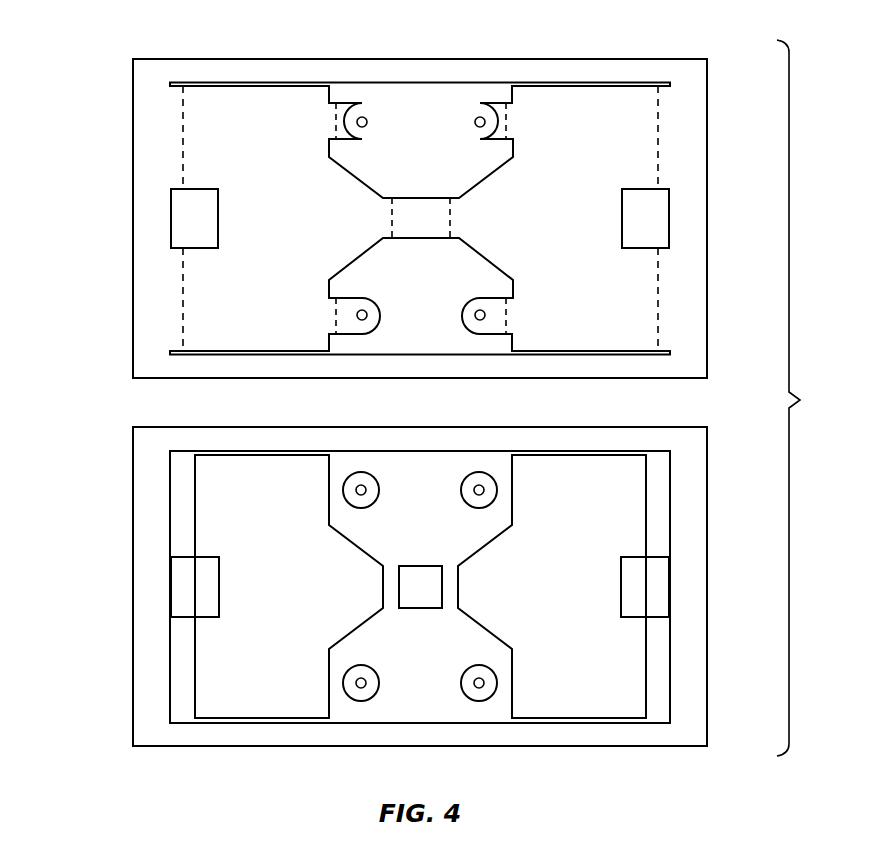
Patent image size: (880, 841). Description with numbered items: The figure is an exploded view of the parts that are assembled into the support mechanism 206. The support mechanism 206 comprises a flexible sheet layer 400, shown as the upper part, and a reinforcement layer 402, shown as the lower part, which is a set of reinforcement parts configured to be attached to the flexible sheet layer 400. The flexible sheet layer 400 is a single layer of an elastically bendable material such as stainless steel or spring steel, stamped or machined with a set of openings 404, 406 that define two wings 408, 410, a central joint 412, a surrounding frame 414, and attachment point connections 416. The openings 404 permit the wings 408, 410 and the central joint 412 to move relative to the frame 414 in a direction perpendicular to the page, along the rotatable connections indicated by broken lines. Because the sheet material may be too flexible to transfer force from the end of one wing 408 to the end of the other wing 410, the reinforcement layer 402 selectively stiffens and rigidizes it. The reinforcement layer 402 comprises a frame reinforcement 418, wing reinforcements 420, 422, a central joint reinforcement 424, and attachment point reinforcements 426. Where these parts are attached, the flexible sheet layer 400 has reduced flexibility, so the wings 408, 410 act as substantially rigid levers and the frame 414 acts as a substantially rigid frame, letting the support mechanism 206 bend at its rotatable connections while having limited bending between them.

The support mechanism 206 is at (814, 398).
The flexible sheet layer 400 is at (114, 263).
The reinforcement layer 402 is at (114, 631).
The openings 404 is at (416, 107).
The openings 406 is at (190, 219).
The wing 408 is at (254, 257).
The wing 410 is at (544, 257).
The central joint 412 is at (400, 231).
The frame 414 is at (568, 70).
The attachment point connections 416 is at (472, 130).
The frame reinforcement 418 is at (402, 733).
The wing reinforcement 420 is at (242, 652).
The wing reinforcement 422 is at (557, 652).
The central joint reinforcement 424 is at (428, 587).
The attachment point reinforcements 426 is at (465, 503).